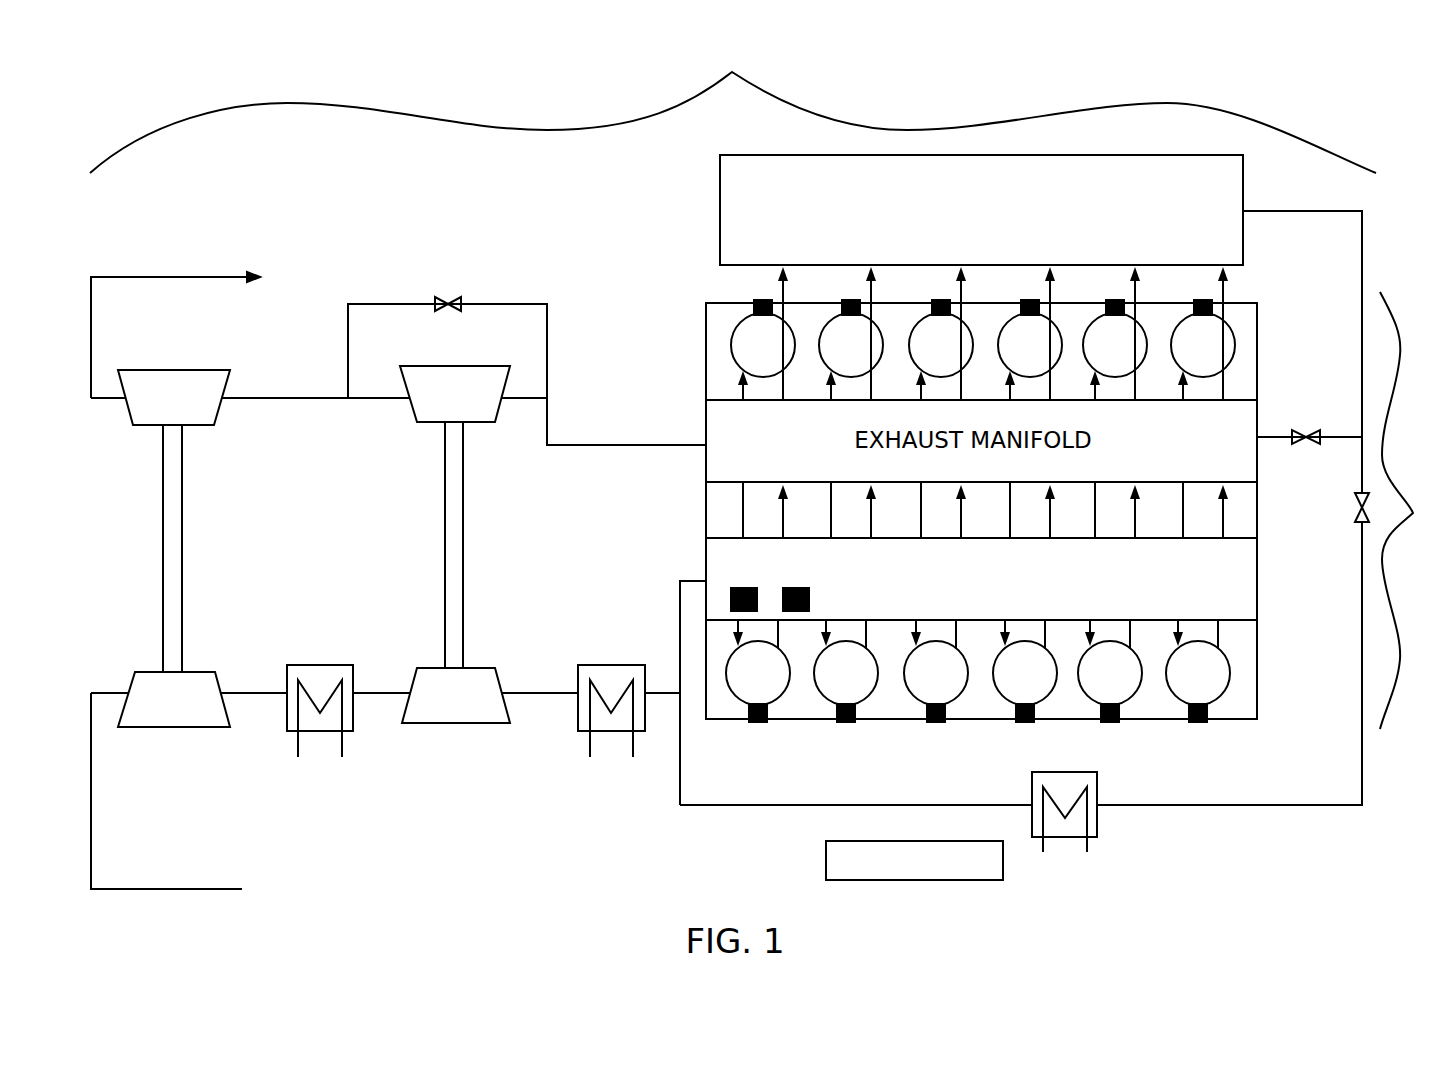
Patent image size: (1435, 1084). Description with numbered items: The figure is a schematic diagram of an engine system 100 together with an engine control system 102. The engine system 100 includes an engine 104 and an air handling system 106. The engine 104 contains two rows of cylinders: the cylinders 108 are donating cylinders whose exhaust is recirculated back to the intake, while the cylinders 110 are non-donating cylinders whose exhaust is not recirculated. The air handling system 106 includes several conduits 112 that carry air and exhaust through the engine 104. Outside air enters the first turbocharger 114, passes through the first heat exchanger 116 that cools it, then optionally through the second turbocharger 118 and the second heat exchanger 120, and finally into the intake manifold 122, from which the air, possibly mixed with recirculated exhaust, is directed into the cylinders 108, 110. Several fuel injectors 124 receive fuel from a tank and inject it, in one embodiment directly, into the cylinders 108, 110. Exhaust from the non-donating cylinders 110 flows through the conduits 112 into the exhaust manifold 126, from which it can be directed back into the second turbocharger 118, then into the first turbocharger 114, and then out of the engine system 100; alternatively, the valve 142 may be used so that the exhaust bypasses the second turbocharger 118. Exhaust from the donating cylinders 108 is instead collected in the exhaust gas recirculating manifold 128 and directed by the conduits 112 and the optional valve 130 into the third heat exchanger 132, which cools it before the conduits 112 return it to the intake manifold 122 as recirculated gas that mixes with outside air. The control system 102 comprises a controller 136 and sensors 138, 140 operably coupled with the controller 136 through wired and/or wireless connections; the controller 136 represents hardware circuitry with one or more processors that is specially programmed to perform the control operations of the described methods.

The engine system 100 is at (1273, 90).
The engine control system 102 is at (978, 900).
The engine 104 is at (1413, 513).
The air handling system 106 is at (732, 72).
The cylinders 108 is at (1235, 337).
The cylinders 110 is at (873, 700).
The conduits 112 is at (612, 445).
The first turbocharger 114 is at (233, 357).
The first heat exchanger 116 is at (373, 758).
The second turbocharger 118 is at (518, 747).
The second heat exchanger 120 is at (663, 758).
The intake manifold 122 is at (1243, 584).
The fuel injectors 124 is at (1212, 727).
The exhaust manifold 126 is at (1250, 410).
The exhaust gas recirculating (EGR) manifold 128 is at (1233, 175).
The valve 130 is at (1355, 507).
The third heat exchanger 132 is at (1097, 783).
The controller 136 is at (961, 860).
The sensor 138 is at (745, 587).
The sensor 140 is at (810, 598).
The valve 142 is at (448, 297).